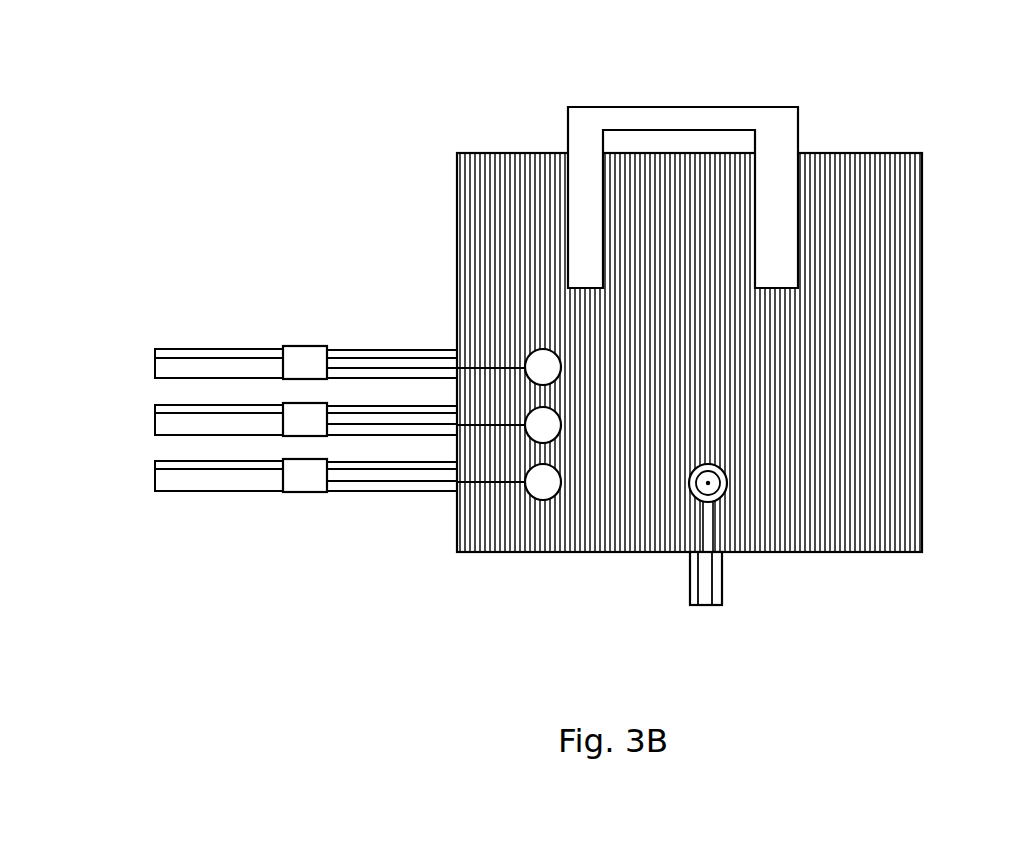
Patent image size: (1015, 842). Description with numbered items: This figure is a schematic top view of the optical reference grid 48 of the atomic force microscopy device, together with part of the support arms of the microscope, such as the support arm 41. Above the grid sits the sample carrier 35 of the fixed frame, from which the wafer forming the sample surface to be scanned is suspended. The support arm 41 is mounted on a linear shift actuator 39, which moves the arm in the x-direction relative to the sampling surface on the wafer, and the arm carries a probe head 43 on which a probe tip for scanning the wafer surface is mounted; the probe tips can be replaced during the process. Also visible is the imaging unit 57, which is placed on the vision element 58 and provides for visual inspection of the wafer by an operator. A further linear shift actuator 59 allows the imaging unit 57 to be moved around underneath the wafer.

The sample carrier 35 is at (685, 107).
The linear shift actuator 39 is at (155, 367).
The support arm 41 is at (355, 347).
The probe head 43 is at (527, 354).
The optical reference grid 48 is at (900, 373).
The imaging unit 57 is at (728, 484).
The vision element 58 is at (717, 503).
The linear shift actuator 59 is at (690, 586).